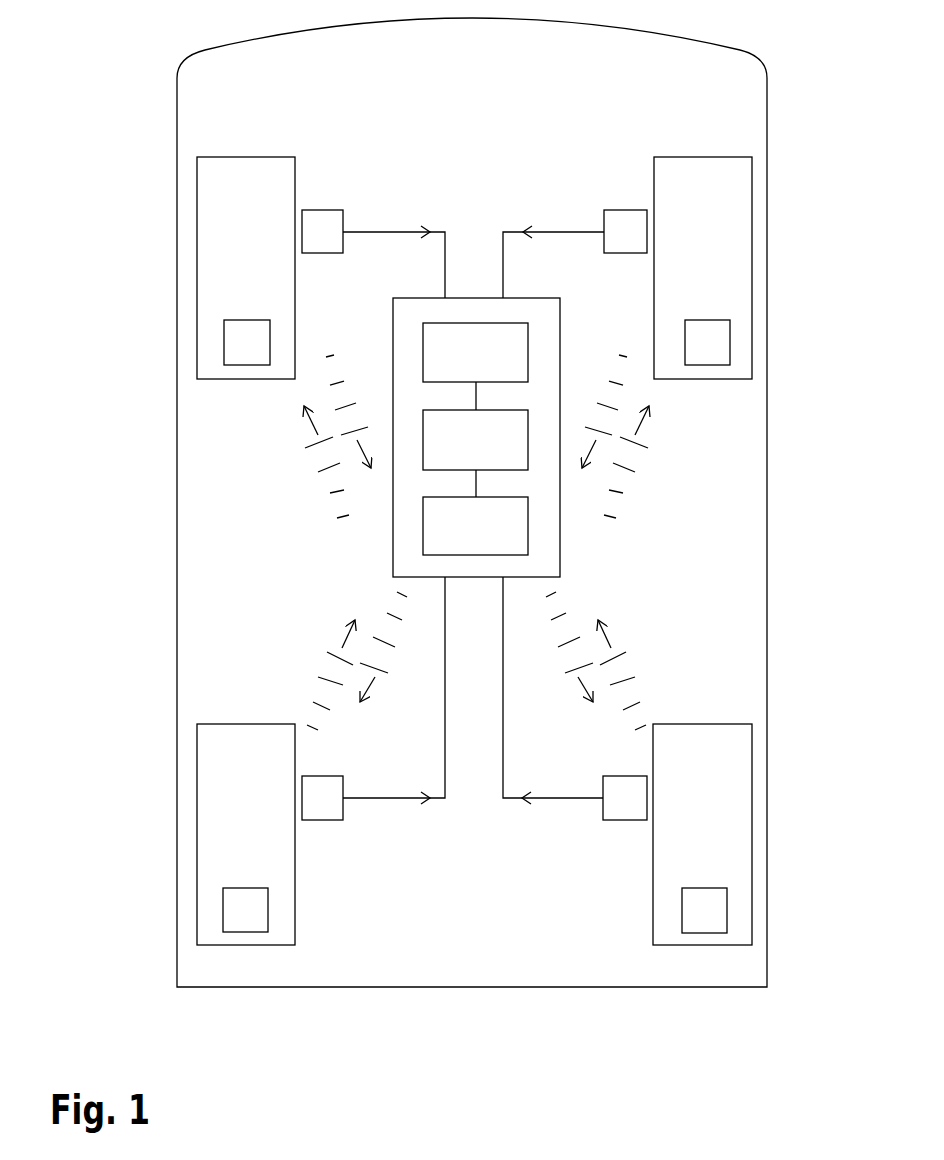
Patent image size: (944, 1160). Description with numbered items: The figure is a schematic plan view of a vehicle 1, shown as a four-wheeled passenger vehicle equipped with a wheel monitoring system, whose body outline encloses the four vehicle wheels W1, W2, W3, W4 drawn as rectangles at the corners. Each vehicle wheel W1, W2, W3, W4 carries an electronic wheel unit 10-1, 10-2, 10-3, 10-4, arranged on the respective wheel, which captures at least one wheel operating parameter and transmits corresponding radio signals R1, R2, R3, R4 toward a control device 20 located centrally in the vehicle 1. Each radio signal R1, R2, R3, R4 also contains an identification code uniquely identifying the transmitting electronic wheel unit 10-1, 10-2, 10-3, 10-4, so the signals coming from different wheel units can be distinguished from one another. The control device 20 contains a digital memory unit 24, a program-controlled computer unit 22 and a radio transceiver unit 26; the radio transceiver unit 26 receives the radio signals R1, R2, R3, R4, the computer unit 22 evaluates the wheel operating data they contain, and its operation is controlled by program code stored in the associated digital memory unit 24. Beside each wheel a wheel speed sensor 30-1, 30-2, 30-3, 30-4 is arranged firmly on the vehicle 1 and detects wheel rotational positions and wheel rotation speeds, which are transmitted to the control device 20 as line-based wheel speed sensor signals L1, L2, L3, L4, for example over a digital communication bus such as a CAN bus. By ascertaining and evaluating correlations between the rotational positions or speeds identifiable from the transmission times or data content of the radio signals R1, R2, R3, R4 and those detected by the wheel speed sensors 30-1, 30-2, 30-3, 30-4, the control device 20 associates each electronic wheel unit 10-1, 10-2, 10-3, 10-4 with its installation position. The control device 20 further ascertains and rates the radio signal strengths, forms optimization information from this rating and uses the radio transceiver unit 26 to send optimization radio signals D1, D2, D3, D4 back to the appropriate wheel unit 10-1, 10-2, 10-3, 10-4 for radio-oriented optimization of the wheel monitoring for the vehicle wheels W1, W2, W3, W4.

The vehicle 1 is at (138, 44).
The vehicle wheel W1 is at (220, 238).
The vehicle wheel W2 is at (728, 240).
The vehicle wheel W3 is at (226, 797).
The vehicle wheel W4 is at (735, 793).
The electronic wheel unit 10-1 is at (236, 337).
The electronic wheel unit 10-2 is at (718, 333).
The electronic wheel unit 10-3 is at (236, 906).
The electronic wheel unit 10-4 is at (718, 906).
The wheel speed sensor 30-1 is at (322, 222).
The wheel speed sensor 30-2 is at (623, 220).
The wheel speed sensor 30-3 is at (325, 807).
The wheel speed sensor 30-4 is at (623, 807).
The control device 20 is at (383, 341).
The program-controlled computer unit 22 is at (492, 454).
The digital memory unit 24 is at (492, 366).
The radio transceiver unit 26 is at (492, 540).
The line-based wheel speed sensor signal L1 is at (394, 251).
The line-based wheel speed sensor signal L2 is at (553, 251).
The line-based wheel speed sensor signal L3 is at (394, 690).
The line-based wheel speed sensor signal L4 is at (553, 690).
The radio signal R1 is at (345, 436).
The radio signal R2 is at (608, 436).
The radio signal R3 is at (342, 661).
The radio signal R4 is at (607, 661).
The optimization radio signal D1 is at (329, 454).
The optimization radio signal D2 is at (624, 454).
The optimization radio signal D3 is at (387, 661).
The optimization radio signal D4 is at (564, 661).